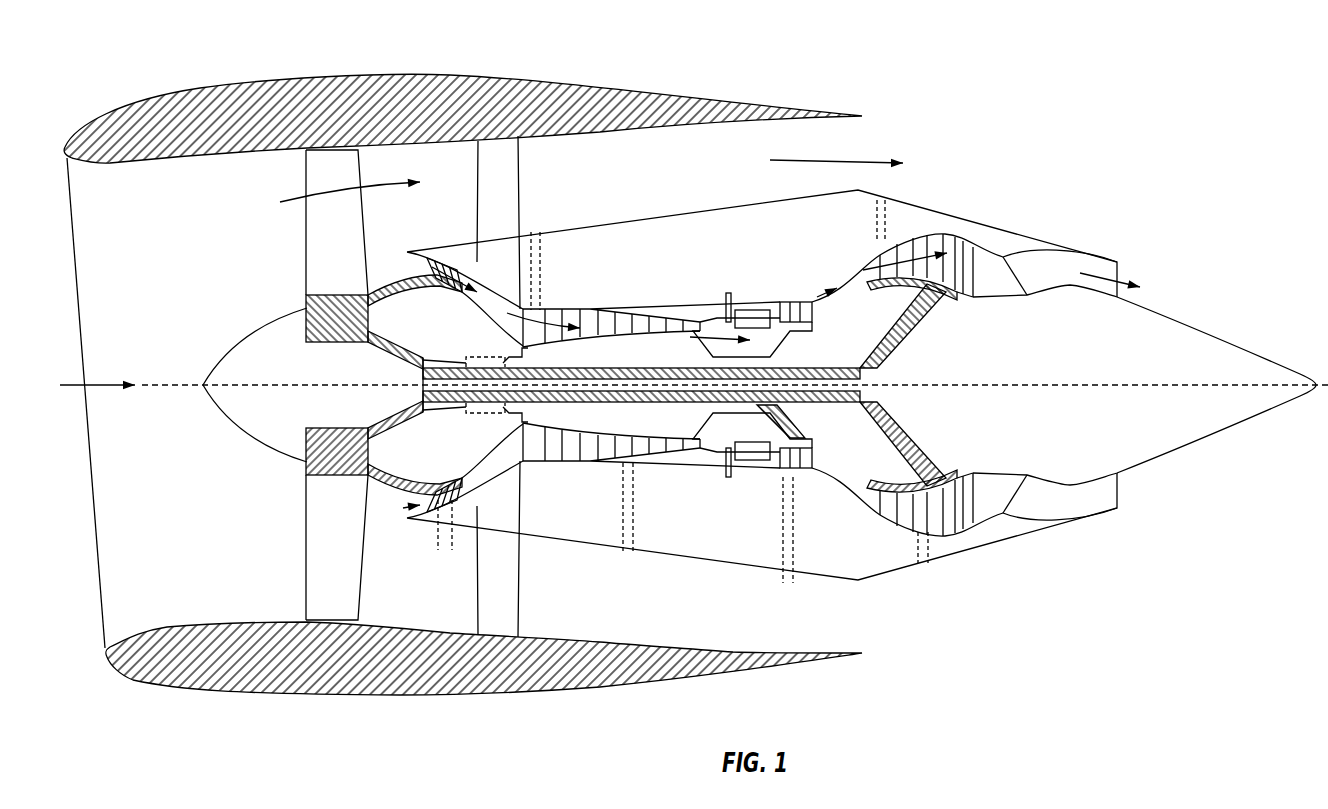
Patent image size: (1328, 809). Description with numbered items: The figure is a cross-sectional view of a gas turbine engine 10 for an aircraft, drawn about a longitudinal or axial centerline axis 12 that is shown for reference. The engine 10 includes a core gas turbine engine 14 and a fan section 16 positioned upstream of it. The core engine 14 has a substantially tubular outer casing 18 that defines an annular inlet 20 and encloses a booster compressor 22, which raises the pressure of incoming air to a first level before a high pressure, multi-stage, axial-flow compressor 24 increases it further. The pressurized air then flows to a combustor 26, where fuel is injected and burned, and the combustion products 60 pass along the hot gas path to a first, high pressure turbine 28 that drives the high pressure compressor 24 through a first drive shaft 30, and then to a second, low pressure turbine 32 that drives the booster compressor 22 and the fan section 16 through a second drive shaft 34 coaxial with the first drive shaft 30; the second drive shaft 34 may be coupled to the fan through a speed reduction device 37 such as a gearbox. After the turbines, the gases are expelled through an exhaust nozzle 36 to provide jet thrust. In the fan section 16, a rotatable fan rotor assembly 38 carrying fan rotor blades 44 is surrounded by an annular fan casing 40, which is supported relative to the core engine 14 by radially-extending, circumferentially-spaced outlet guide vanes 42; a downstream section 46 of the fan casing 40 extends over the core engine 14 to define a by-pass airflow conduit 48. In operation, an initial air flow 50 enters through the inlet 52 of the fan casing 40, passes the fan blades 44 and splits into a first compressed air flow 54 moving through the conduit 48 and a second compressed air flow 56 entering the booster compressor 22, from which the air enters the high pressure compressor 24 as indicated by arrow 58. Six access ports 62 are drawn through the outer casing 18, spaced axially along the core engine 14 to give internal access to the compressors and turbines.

The gas turbine engine 10 is at (694, 393).
The longitudinal or axial centerline axis 12 is at (1063, 383).
The core gas turbine engine 14 is at (846, 404).
The fan section 16 is at (481, 394).
The outer casing 18 is at (687, 571).
The annular inlet 20 is at (403, 508).
The booster compressor 22 is at (480, 463).
The high pressure compressor 24 is at (553, 453).
The combustor 26 is at (753, 463).
The first (high pressure) turbine 28 is at (813, 452).
The first (high pressure) drive shaft 30 is at (795, 330).
The second (low pressure) turbine 32 is at (957, 527).
The second (low pressure) drive shaft 34 is at (485, 366).
The exhaust nozzle 36 is at (1118, 267).
The speed reduction device 37 is at (487, 413).
The fan rotor assembly 38 is at (366, 344).
The fan casing 40 is at (353, 695).
The outlet guide vanes 42 is at (527, 160).
The fan rotor blades 44 is at (305, 568).
The downstream section 46 is at (745, 95).
The by-pass airflow conduit 48 is at (668, 165).
The initial air flow 50 is at (97, 384).
The inlet 52 is at (102, 617).
The first compressed air flow 54 is at (325, 190).
The second compressed air flow 56 is at (392, 263).
The air flow into high pressure compressor 58 is at (543, 312).
The combustion products 60 is at (793, 300).
The access ports 62 is at (543, 250).